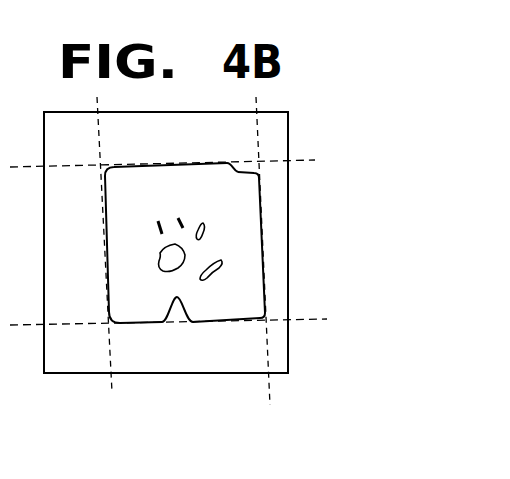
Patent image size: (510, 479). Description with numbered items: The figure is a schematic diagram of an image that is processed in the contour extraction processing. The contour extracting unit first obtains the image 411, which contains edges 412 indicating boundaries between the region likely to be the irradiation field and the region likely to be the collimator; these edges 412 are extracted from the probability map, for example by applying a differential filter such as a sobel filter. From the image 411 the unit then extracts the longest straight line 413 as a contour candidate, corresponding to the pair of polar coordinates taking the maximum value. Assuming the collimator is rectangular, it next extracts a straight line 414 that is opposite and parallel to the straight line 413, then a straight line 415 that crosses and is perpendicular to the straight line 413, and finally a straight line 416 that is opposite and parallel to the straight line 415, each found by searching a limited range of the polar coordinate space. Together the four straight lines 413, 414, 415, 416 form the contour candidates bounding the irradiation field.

The image 411 is at (203, 374).
The edges 412 is at (235, 174).
The longest straight line 413 is at (270, 405).
The straight line 414 is at (112, 392).
The straight line 415 is at (303, 320).
The straight line 416 is at (303, 162).